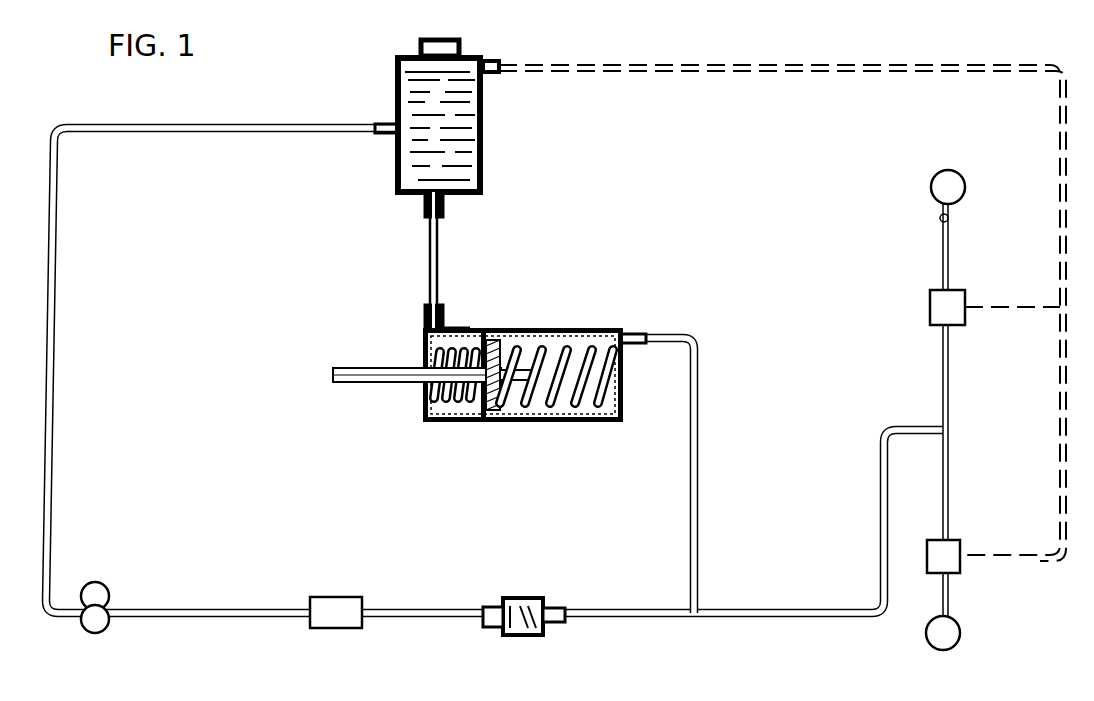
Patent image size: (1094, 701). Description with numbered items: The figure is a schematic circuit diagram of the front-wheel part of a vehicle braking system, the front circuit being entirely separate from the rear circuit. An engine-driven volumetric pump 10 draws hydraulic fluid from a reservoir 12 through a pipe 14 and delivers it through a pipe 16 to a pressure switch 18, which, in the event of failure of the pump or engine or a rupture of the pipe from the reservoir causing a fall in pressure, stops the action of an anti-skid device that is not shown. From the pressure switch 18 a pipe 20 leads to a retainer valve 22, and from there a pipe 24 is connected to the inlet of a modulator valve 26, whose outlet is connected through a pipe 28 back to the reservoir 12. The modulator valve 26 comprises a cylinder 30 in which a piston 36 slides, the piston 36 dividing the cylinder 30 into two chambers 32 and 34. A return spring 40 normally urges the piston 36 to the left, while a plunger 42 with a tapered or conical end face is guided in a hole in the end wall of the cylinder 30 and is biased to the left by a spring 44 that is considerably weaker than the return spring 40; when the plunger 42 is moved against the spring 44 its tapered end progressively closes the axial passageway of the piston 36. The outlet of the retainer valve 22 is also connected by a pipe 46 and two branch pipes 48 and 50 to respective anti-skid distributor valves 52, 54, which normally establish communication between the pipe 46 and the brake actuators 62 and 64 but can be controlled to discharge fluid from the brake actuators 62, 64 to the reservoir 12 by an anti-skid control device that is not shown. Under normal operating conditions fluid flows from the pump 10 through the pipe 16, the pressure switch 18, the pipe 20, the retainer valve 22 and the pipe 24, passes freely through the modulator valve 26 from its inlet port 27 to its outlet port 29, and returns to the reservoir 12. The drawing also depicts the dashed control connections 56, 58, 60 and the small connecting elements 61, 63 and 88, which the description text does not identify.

The volumetric pump 10 is at (100, 590).
The reservoir 12 is at (396, 168).
The pipe 14 is at (52, 358).
The pipe 16 is at (215, 610).
The pressure switch 18 is at (335, 597).
The pipe 20 is at (420, 610).
The retainer valve 22 is at (515, 598).
The pipe 24 is at (699, 465).
The modulator valve 26 is at (531, 427).
The inlet port 27 is at (640, 344).
The pipe 28 is at (428, 243).
The outlet port 29 is at (430, 306).
The cylinder 30 is at (560, 330).
The chamber 32 is at (592, 405).
The chamber 34 is at (468, 410).
The piston 36 is at (483, 420).
The return spring 40 is at (600, 340).
The plunger 42 is at (350, 384).
The spring 44 is at (455, 328).
The pipe 46 is at (762, 611).
The branch pipe 48 is at (950, 372).
The branch pipe 50 is at (950, 482).
The anti-skid distributor valve 52 is at (936, 302).
The anti-skid distributor valve 54 is at (932, 540).
The control line 56 is at (1000, 306).
The control line 58 is at (1000, 555).
The control line 60 is at (808, 76).
The connector 61 is at (950, 218).
The brake actuator 62 is at (938, 190).
The conduit 63 is at (950, 597).
The brake actuator 64 is at (958, 632).
The push rod 88 is at (505, 368).